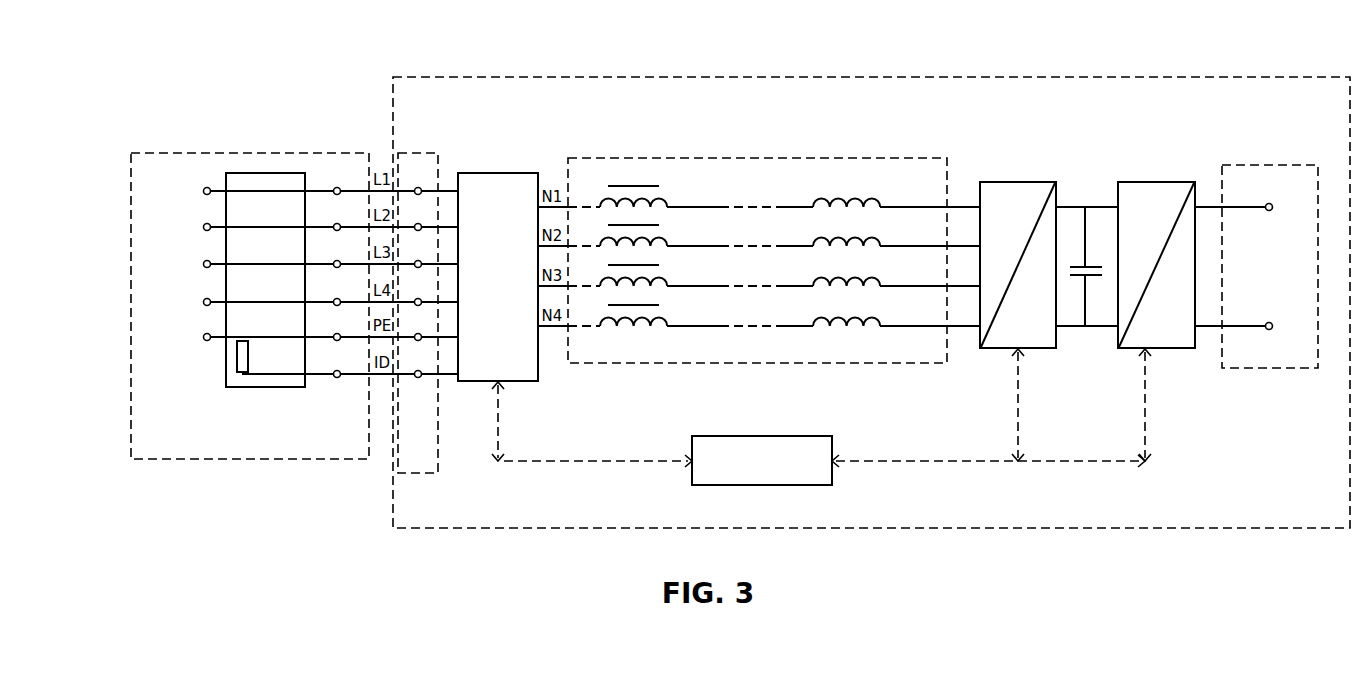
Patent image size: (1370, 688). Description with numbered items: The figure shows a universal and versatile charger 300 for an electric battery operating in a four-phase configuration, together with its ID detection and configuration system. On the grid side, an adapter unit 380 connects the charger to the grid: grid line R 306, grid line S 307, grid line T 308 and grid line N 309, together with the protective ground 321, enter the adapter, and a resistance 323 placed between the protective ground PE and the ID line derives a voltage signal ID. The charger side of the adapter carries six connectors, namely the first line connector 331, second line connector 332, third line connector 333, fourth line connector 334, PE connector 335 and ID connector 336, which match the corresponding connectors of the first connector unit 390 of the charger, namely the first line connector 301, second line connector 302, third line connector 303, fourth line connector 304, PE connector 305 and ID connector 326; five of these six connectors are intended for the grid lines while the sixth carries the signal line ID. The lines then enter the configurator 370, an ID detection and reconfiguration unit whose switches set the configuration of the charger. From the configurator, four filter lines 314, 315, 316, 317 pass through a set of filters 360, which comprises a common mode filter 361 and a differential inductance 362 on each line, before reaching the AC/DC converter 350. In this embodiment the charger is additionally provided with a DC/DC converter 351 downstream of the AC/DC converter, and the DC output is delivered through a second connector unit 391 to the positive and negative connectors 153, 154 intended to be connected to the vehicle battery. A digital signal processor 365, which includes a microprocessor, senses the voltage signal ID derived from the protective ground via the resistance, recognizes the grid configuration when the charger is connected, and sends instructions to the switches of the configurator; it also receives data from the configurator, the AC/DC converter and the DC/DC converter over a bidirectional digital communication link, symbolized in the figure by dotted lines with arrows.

The charger 300 is at (871, 280).
The adapter unit 380 is at (278, 493).
The first connector unit 390 is at (436, 509).
The grid line R connector 306 is at (272, 191).
The grid line S connector 307 is at (272, 227).
The grid line T connector 308 is at (272, 264).
The grid line N connector 309 is at (272, 302).
The protective ground 321 is at (272, 337).
The resistance 323 is at (347, 357).
The L1 connector of adapter 331 is at (338, 177).
The L2 connector of adapter 332 is at (338, 213).
The L3 connector of adapter 333 is at (338, 250).
The L4 connector of adapter 334 is at (338, 288).
The PE connector of adapter 335 is at (338, 323).
The ID connector of adapter 336 is at (338, 360).
The L1 connector 301 is at (418, 177).
The L2 connector 302 is at (418, 213).
The L3 connector 303 is at (418, 250).
The L4 connector 304 is at (418, 288).
The PE connector 305 is at (418, 323).
The ID connector 326 is at (418, 360).
The configurator 370 is at (498, 277).
The set of filters 360 is at (757, 244).
The common mode filter 361 is at (605, 182).
The differential inductance 362 is at (849, 182).
The filter line 314 is at (759, 192).
The filter line 315 is at (759, 231).
The filter line 316 is at (759, 271).
The filter line 317 is at (759, 311).
The AC/DC converter 350 is at (1018, 250).
The DC/DC converter 351 is at (1156, 250).
The output terminal block 391 is at (1270, 252).
The positive connector 153 is at (1245, 218).
The negative connector 154 is at (1243, 336).
The digital signal processor 365 is at (821, 417).